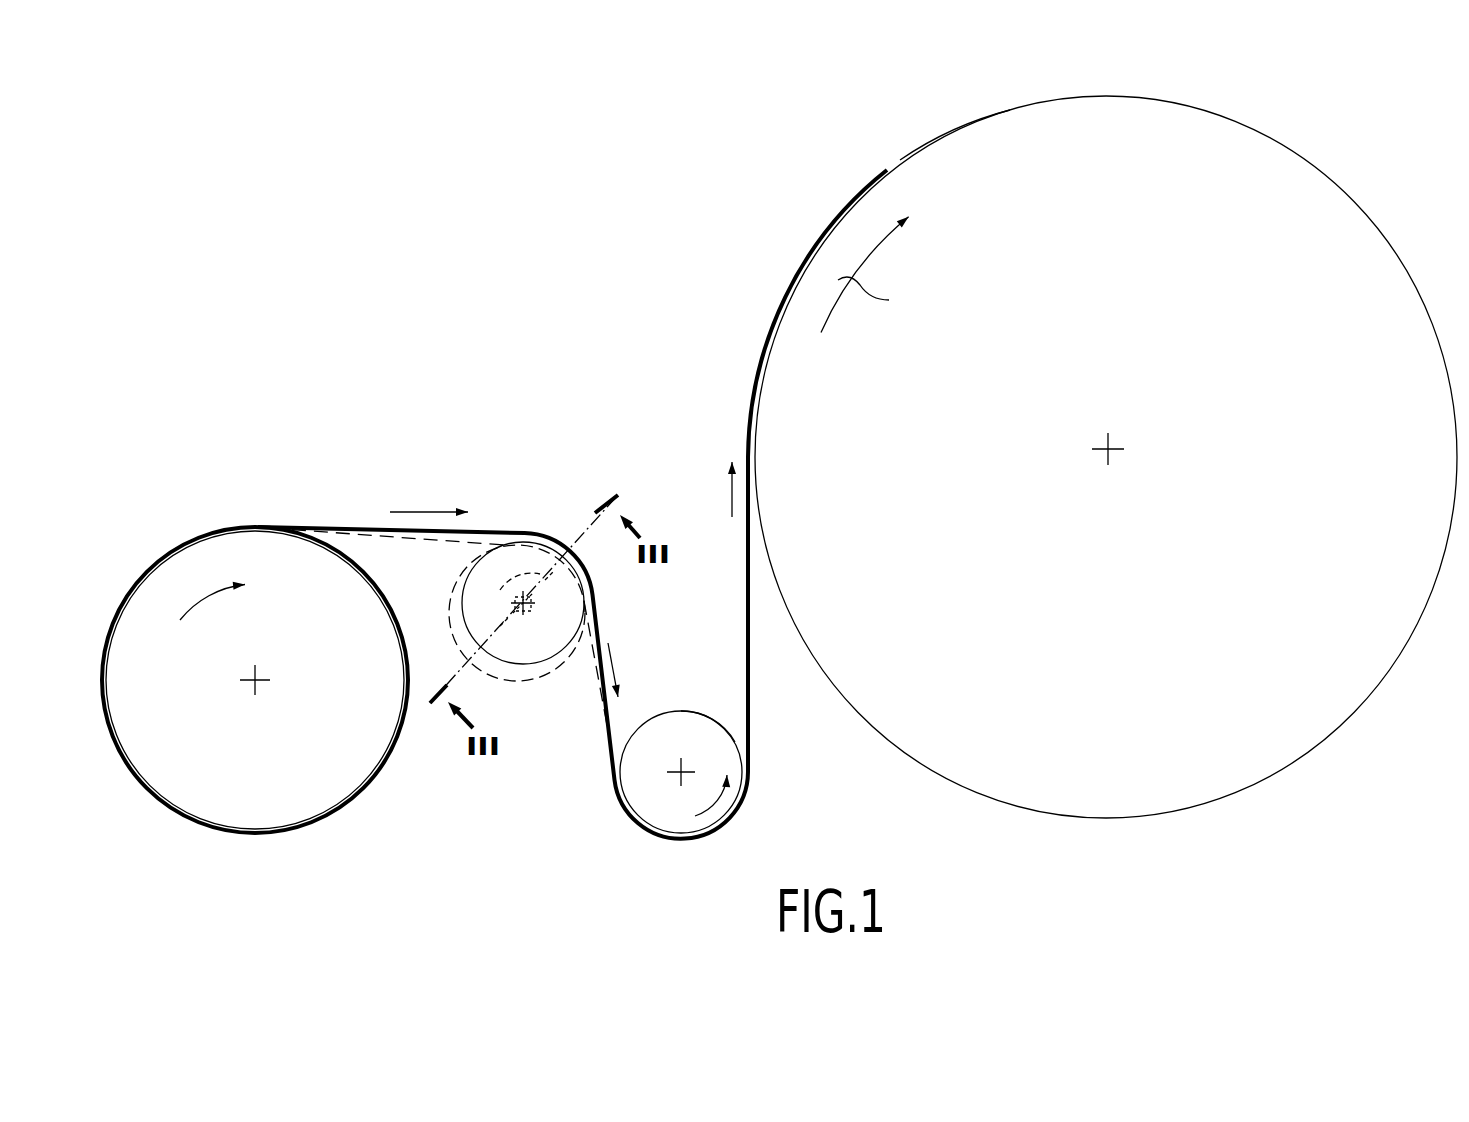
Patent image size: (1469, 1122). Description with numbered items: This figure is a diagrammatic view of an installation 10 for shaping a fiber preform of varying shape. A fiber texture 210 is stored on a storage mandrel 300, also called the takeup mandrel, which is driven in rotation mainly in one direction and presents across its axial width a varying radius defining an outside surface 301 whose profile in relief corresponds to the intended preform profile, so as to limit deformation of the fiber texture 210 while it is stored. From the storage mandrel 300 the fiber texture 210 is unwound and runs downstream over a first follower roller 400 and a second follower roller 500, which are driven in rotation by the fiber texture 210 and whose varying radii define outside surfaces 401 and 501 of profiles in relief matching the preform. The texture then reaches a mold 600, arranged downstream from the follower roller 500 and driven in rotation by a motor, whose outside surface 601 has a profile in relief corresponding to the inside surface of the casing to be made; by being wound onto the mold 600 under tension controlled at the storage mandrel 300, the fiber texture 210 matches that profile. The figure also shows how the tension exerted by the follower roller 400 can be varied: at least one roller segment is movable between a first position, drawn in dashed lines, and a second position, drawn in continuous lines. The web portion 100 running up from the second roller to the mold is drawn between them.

The installation 10 is at (240, 192).
The web material 100 is at (742, 556).
The fiber texture 210 is at (318, 527).
The storage mandrel 300 is at (333, 842).
The outside surface 301 is at (378, 772).
The first follower roller 400 is at (515, 684).
The outside surface 401 is at (452, 610).
The second follower roller 500 is at (662, 680).
The outside surface 501 is at (700, 711).
The mold 600 is at (1355, 148).
The outside surface 601 is at (958, 130).